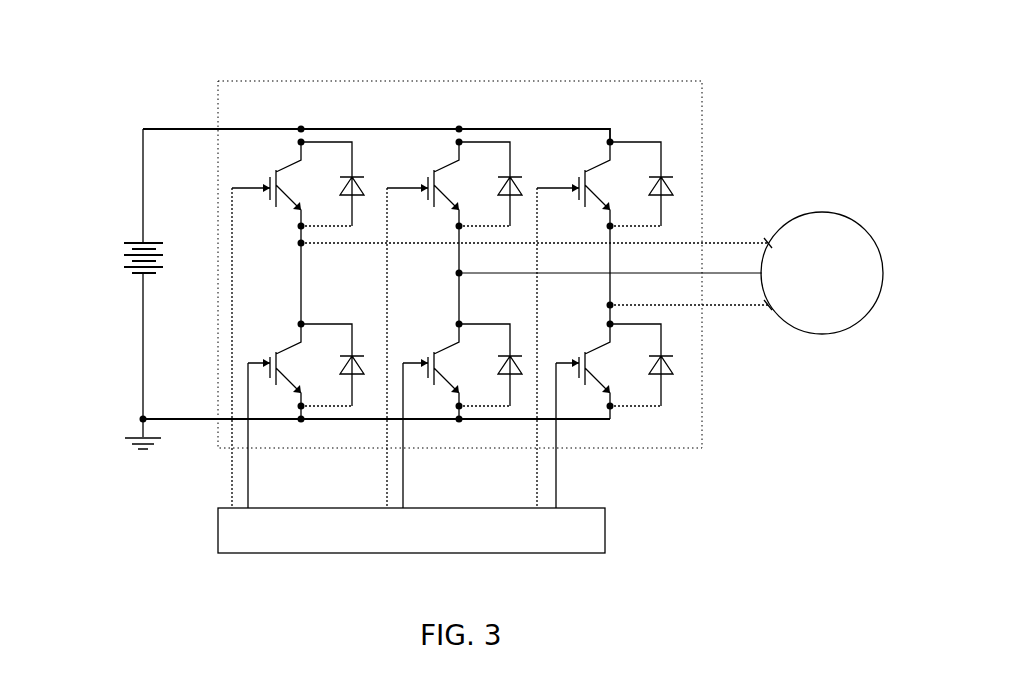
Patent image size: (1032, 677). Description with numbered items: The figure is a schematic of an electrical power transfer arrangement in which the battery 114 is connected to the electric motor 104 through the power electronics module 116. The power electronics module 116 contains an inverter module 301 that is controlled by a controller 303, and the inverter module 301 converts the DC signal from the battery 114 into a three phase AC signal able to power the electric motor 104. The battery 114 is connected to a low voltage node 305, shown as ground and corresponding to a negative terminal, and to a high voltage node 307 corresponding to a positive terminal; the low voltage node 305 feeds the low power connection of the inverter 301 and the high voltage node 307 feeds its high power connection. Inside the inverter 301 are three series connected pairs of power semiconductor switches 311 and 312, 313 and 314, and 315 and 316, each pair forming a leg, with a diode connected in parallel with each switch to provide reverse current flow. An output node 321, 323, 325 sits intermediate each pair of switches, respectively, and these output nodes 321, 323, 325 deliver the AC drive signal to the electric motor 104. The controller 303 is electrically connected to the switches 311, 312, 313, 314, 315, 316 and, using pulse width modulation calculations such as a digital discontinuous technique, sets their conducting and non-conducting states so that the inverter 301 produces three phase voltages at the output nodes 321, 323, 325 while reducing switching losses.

The power electronics module 116 is at (570, 53).
The inverter module 301 is at (700, 133).
The high voltage node 307 is at (143, 129).
The low voltage node 305 is at (143, 419).
The battery 114 is at (128, 243).
The switch 311 is at (286, 170).
The switch 312 is at (292, 389).
The switch 313 is at (455, 163).
The switch 314 is at (431, 387).
The switch 315 is at (604, 164).
The switch 316 is at (587, 387).
The output node 321 is at (296, 248).
The output node 323 is at (455, 278).
The output node 325 is at (608, 306).
The electric motor 104 is at (852, 217).
The controller 303 is at (525, 552).